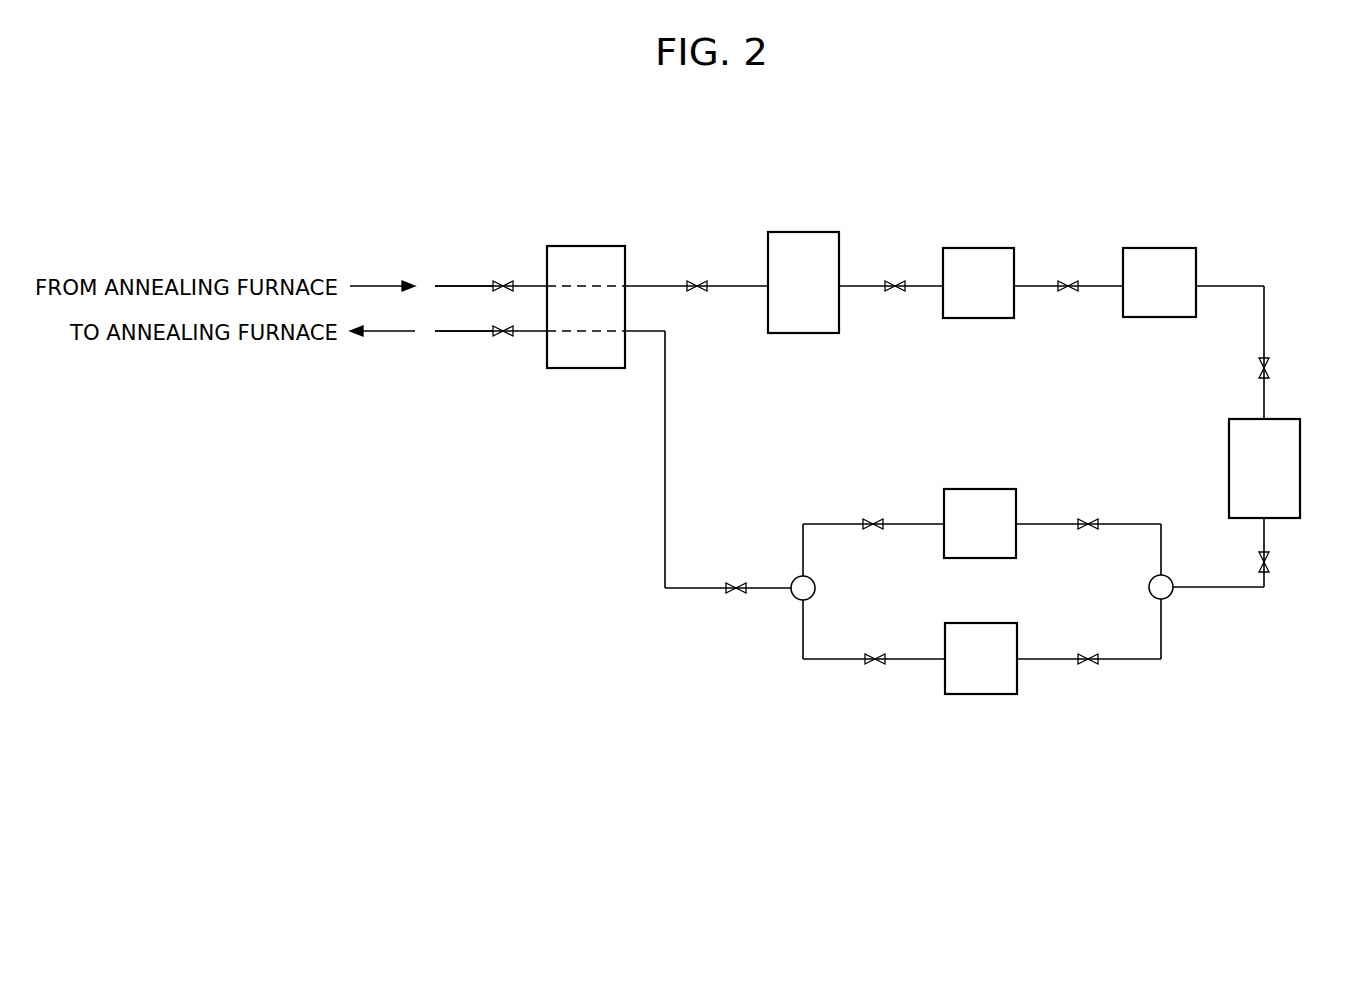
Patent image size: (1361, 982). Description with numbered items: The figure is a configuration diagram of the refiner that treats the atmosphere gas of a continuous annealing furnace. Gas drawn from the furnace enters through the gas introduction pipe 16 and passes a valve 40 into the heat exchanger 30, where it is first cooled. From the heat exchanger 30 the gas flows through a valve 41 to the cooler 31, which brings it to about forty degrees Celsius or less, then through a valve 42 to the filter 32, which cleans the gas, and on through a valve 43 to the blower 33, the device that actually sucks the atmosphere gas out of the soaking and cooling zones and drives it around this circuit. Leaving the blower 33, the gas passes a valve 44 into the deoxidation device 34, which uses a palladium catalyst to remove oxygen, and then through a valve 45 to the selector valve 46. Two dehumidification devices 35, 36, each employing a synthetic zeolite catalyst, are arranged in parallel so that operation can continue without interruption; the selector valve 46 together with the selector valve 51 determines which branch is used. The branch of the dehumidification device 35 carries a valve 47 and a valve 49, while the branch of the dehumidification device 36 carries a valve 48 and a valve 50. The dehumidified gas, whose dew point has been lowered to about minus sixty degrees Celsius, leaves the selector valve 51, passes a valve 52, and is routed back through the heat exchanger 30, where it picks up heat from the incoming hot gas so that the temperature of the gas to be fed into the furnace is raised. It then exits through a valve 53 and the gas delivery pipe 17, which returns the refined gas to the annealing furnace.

The gas introduction pipe 16 is at (458, 282).
The gas delivery pipe 17 is at (456, 336).
The heat exchanger 30 is at (583, 245).
The cooler 31 is at (803, 231).
The filter 32 is at (977, 247).
The blower 33 is at (1155, 247).
The deoxidation device 34 is at (1301, 468).
The dehumidification device 35 is at (980, 488).
The dehumidification device 36 is at (982, 695).
The valve 40 is at (503, 280).
The valve 41 is at (697, 280).
The valve 42 is at (895, 280).
The valve 43 is at (1068, 280).
The valve 44 is at (1270, 368).
The valve 45 is at (1270, 562).
The selector valve 46 is at (1148, 588).
The valve 47 is at (1088, 518).
The valve 48 is at (1088, 665).
The valve 49 is at (873, 518).
The valve 50 is at (875, 665).
The selector valve 51 is at (816, 588).
The valve 52 is at (736, 582).
The valve 53 is at (503, 337).